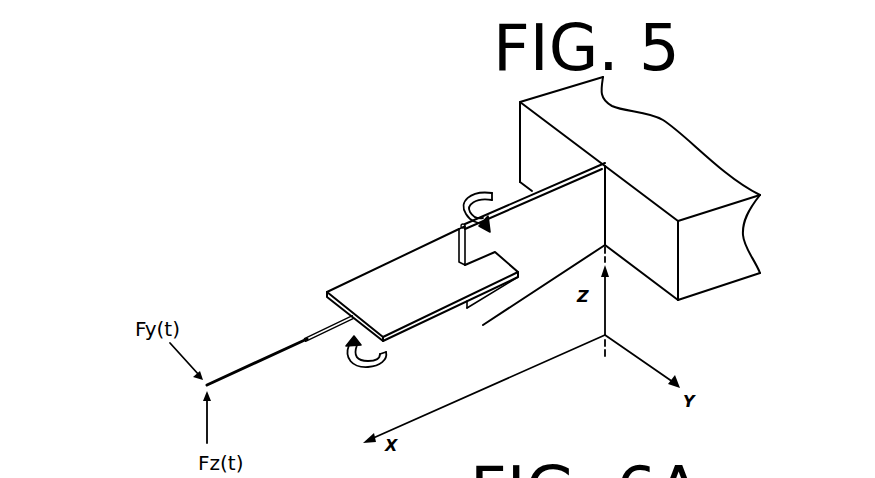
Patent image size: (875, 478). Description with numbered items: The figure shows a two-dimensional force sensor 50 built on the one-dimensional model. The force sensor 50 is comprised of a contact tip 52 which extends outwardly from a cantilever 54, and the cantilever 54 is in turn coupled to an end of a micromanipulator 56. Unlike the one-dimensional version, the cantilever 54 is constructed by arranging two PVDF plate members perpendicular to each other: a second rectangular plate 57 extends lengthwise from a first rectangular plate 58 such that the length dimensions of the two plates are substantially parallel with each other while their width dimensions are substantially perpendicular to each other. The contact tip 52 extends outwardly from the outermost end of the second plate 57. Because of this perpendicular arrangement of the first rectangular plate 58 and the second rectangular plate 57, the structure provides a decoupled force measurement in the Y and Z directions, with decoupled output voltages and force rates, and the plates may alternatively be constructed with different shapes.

The force sensor 50 is at (251, 107).
The contact tip 52 is at (200, 387).
The cantilever 54 is at (546, 285).
The micromanipulator 56 is at (746, 233).
The second rectangular plate 57 is at (410, 258).
The first rectangular plate 58 is at (508, 195).